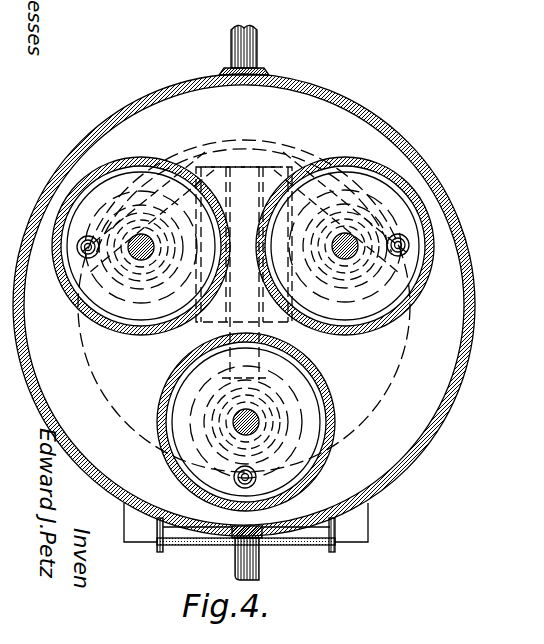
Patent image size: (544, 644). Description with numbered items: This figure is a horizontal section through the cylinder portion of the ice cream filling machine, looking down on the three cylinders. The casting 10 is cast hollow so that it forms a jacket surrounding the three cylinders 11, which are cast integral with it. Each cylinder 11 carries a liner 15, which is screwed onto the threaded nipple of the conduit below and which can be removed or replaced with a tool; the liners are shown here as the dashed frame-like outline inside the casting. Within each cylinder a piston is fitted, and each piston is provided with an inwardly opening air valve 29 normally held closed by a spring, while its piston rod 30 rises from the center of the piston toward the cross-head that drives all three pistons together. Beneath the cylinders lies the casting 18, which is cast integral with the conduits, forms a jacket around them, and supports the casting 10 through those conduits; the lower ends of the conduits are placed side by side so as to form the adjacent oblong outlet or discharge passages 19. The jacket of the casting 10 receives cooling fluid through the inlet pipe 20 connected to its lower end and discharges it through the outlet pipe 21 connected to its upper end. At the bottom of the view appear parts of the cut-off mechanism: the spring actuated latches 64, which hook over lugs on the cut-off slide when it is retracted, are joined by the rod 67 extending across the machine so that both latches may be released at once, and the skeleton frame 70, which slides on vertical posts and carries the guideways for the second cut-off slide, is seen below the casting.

The casting 10 is at (447, 412).
The cylinders 11 is at (60, 284).
The liners 15 is at (138, 334).
The casting 18 is at (406, 346).
The outlet or discharge passages 19 is at (215, 168).
The inlet pipe 20 is at (258, 46).
The outlet pipe 21 is at (261, 570).
The air valve 29 is at (88, 259).
The piston rods 30 is at (141, 262).
The spring actuated latches 64 is at (156, 550).
The rod 67 is at (176, 547).
The skeleton frame 70 is at (370, 528).